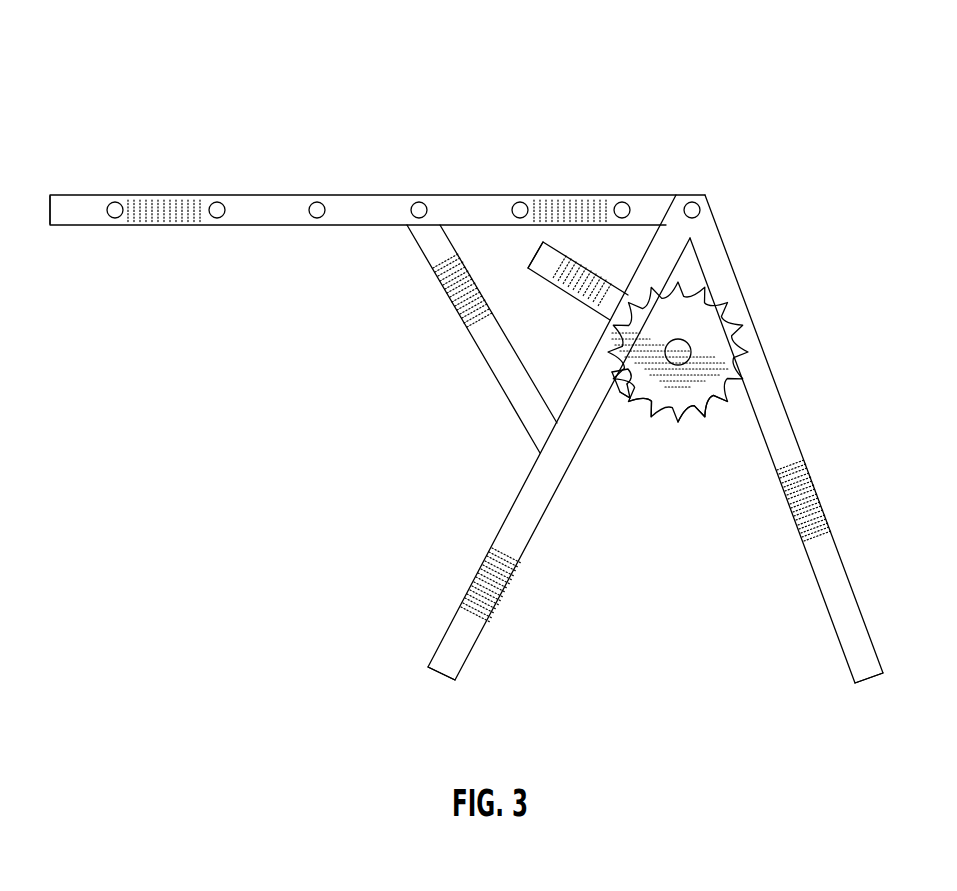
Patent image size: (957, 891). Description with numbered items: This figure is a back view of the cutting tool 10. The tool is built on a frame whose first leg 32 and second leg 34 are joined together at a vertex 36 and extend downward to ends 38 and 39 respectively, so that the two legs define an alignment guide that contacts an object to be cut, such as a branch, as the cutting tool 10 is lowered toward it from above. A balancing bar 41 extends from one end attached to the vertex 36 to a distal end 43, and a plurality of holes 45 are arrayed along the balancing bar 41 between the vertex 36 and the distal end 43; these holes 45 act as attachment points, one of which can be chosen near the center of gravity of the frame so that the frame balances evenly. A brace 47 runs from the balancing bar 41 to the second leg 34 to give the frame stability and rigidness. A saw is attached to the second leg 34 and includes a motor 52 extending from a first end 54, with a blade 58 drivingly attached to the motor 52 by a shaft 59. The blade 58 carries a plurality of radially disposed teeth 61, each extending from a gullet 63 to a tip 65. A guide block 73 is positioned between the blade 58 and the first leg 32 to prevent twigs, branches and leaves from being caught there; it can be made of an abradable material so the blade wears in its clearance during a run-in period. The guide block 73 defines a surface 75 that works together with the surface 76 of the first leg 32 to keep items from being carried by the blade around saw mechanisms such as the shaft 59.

The cutting tool 10 is at (516, 82).
The first leg 32 is at (547, 510).
The second leg 34 is at (798, 440).
The vertex 36 is at (710, 203).
The end of the first leg 38 is at (868, 685).
The end of the second leg 39 is at (440, 677).
The balancing bar 41 is at (265, 207).
The distal end of the balancing bar 43 is at (50, 207).
The holes 45 is at (418, 201).
The brace 47 is at (478, 346).
The motor 52 is at (578, 265).
The first end of the motor 54 is at (537, 262).
The blade 58 is at (660, 416).
The shaft 59 is at (691, 348).
The teeth 61 is at (695, 406).
The gullet 63 is at (712, 412).
The tip 65 is at (634, 410).
The guide block 73 is at (620, 377).
The surface of the guide block 75 is at (627, 399).
The surface of the first leg 76 is at (622, 392).